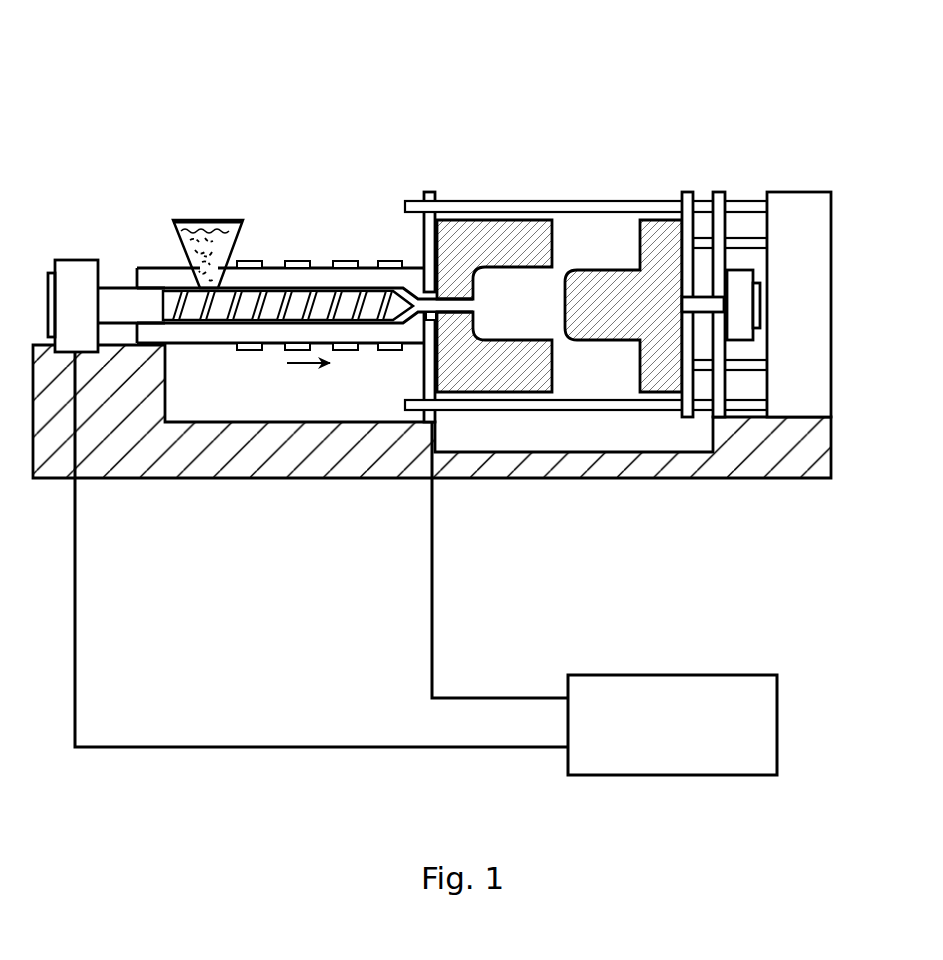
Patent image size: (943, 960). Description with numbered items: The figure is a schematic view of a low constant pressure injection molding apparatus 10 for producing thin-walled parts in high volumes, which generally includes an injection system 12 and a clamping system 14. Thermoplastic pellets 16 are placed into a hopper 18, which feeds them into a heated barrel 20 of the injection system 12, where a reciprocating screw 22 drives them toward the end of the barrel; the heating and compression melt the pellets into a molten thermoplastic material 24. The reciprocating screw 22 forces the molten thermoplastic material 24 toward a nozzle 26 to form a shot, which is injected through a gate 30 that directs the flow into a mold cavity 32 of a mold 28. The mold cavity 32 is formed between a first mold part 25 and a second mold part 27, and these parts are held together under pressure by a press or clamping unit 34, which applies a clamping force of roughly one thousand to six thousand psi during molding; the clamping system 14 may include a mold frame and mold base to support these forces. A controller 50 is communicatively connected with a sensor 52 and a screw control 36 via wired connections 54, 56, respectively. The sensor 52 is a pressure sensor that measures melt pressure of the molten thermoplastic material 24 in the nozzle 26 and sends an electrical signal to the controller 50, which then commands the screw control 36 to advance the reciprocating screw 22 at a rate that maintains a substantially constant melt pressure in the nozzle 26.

The low constant pressure injection molding apparatus 10 is at (395, 70).
The injection system 12 is at (297, 332).
The clamping system 14 is at (575, 484).
The thermoplastic pellets 16 is at (192, 238).
The hopper 18 is at (220, 219).
The heated barrel 20 is at (321, 260).
The reciprocating screw 22 is at (219, 310).
The molten thermoplastic material 24 is at (374, 290).
The first mold part 25 is at (494, 380).
The nozzle 26 is at (438, 295).
The second mold part 27 is at (624, 323).
The mold 28 is at (555, 206).
The gate 30 is at (462, 300).
The mold cavity 32 is at (515, 280).
The press or clamping unit 34 is at (771, 186).
The screw control 36 is at (69, 260).
The controller 50 is at (738, 675).
The sensor 52 is at (427, 318).
The wired connection 54 is at (504, 697).
The wired connection 56 is at (313, 746).